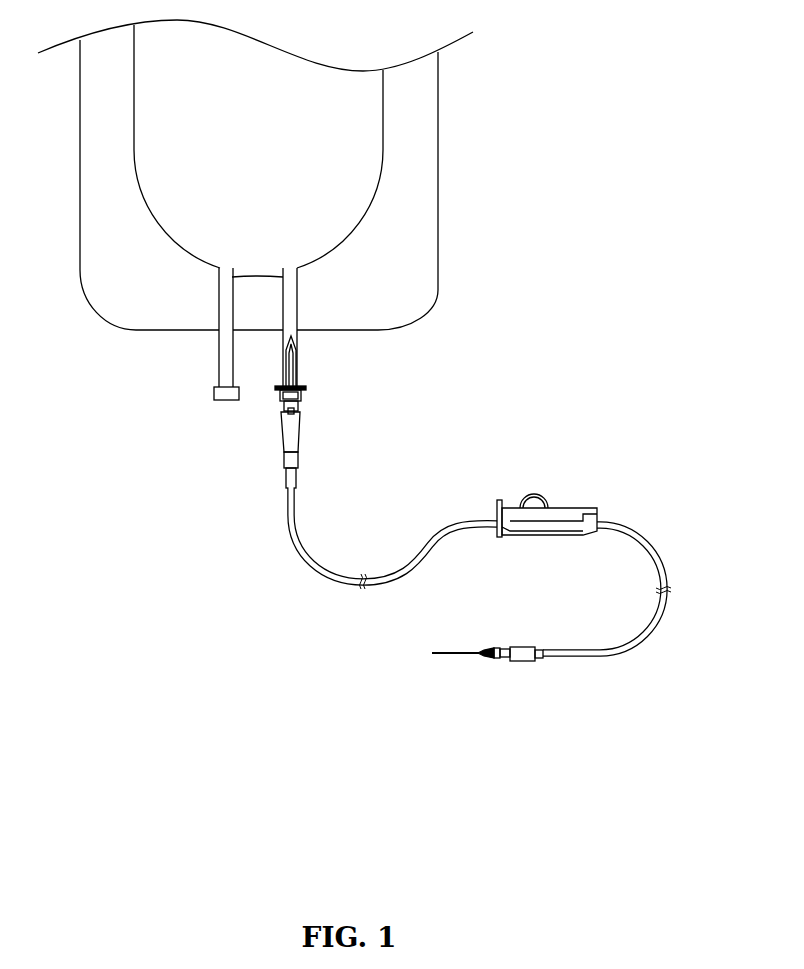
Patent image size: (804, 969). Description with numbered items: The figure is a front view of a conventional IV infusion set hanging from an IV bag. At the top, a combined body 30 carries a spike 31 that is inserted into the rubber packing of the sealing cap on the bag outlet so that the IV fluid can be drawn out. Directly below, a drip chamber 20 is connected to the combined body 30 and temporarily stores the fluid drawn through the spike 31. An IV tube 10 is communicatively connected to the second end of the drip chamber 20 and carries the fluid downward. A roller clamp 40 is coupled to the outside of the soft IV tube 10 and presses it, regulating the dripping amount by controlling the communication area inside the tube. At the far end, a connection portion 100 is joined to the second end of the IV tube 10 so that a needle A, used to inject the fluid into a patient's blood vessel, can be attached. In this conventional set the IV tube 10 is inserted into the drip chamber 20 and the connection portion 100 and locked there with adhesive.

The IV tube 10 is at (308, 565).
The drip chamber 20 is at (299, 443).
The combined body 30 is at (300, 395).
The spike 31 is at (291, 358).
The roller clamp 40 is at (570, 510).
The connection portion 100 is at (530, 665).
The needle A is at (481, 657).